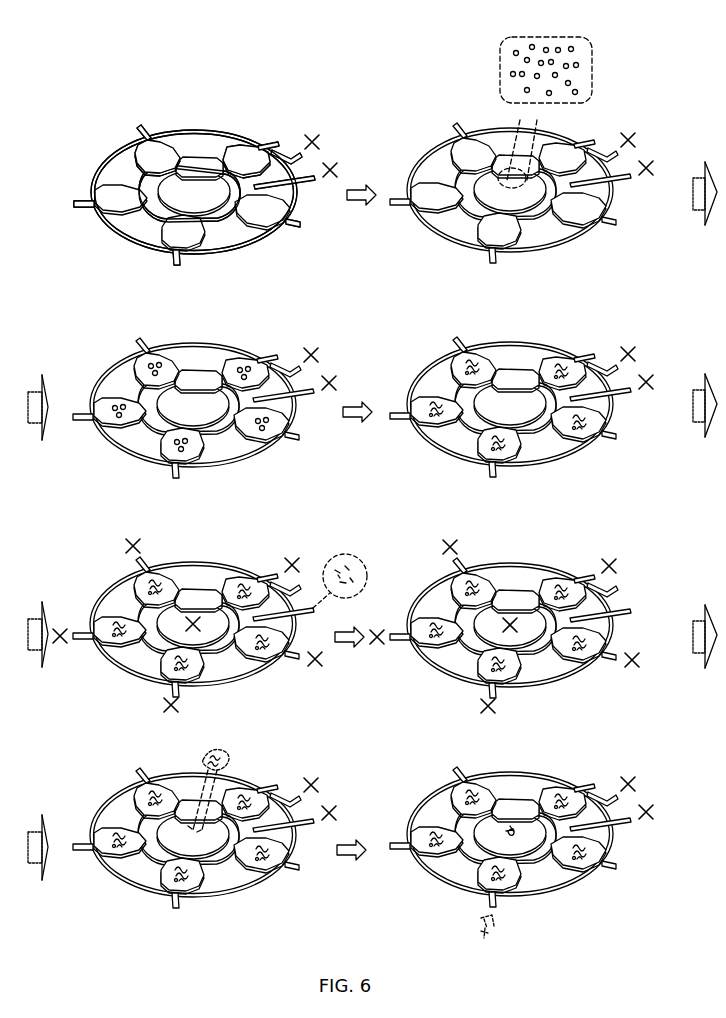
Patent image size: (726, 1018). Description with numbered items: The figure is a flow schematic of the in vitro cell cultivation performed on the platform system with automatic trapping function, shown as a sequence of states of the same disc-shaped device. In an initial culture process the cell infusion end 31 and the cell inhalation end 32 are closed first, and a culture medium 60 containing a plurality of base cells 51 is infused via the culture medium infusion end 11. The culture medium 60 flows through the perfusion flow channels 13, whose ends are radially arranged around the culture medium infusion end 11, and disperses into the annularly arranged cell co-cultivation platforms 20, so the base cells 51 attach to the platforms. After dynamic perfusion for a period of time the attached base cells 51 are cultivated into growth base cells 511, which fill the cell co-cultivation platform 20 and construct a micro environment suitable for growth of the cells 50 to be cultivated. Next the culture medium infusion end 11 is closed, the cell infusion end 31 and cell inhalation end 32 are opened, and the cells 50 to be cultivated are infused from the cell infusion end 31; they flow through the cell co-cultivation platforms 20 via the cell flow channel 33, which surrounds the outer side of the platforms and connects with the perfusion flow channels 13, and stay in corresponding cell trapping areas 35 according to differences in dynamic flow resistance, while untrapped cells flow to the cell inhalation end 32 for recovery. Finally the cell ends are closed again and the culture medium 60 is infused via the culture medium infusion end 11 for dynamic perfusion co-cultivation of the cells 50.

The culture medium infusion end 11 is at (165, 186).
The perfusion flow channels 13 is at (90, 200).
The cell co-cultivation platform 20 is at (245, 156).
The cell infusion end 31 is at (318, 180).
The cell inhalation end 32 is at (298, 150).
The cell flow channel 33 is at (113, 238).
The cell trapping areas 35 is at (140, 132).
The cells to be cultivated 50 is at (342, 569).
The base cells 51 is at (583, 71).
The growth base cells 511 is at (550, 347).
The culture medium 60 is at (498, 52).